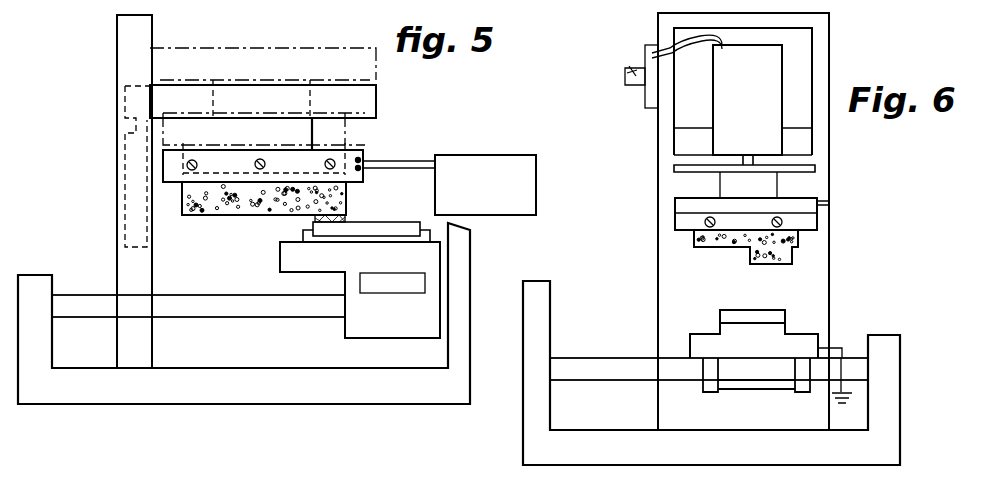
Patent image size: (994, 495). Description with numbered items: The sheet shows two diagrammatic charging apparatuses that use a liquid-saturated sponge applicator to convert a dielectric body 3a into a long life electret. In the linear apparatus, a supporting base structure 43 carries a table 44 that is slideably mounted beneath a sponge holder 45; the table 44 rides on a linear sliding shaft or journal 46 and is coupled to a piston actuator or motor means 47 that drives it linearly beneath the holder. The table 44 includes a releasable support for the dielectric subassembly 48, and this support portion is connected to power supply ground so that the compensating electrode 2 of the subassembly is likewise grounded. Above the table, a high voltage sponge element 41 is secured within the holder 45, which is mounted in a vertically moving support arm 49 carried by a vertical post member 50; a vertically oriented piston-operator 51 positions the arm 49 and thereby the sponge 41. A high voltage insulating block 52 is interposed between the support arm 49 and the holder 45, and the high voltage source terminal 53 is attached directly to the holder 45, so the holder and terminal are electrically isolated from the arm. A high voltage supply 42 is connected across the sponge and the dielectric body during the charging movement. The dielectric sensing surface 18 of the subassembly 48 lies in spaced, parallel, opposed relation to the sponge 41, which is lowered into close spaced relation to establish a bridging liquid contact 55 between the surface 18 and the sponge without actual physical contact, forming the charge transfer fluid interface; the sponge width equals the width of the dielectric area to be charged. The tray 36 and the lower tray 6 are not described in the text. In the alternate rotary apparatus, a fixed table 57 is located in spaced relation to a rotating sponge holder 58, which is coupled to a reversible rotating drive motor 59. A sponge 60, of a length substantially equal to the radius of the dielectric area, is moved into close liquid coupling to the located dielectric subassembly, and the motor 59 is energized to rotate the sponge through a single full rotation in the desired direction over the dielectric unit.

In FIG. 5, the compensating electrode 2 is at (410, 243).
In FIG. 5, the dielectric body 3a is at (365, 232).
In FIG. 6, the tray 6 is at (711, 373).
In FIG. 5, the dielectric sensing surface 18 is at (305, 228).
In FIG. 5, the tray 36 is at (213, 393).
In FIG. 5, the high voltage sponge element 41 is at (197, 218).
In FIG. 5, the high voltage supply 42 is at (498, 155).
In FIG. 5, the supporting base structure 43 is at (155, 392).
In FIG. 5, the table 44 is at (362, 330).
In FIG. 5, the sponge holder 45 is at (168, 187).
In FIG. 5, the linear sliding shaft 46 is at (225, 318).
In FIG. 5, the piston actuator 47 is at (385, 283).
In FIG. 5, the dielectric subassembly 48 is at (345, 243).
In FIG. 5, the support arm 49 is at (362, 96).
In FIG. 5, the vertical post member 50 is at (115, 73).
In FIG. 5, the piston-operator 51 is at (125, 164).
In FIG. 5, the high voltage insulating block 52 is at (305, 131).
In FIG. 5, the high voltage source terminal 53 is at (362, 156).
In FIG. 5, the bridging liquid contact 55 is at (347, 218).
In FIG. 6, the fixed table 57 is at (743, 383).
In FIG. 6, the rotating sponge holder 58 is at (808, 206).
In FIG. 6, the reversible rotating drive motor 59 is at (727, 221).
In FIG. 6, the sponge 60 is at (783, 262).